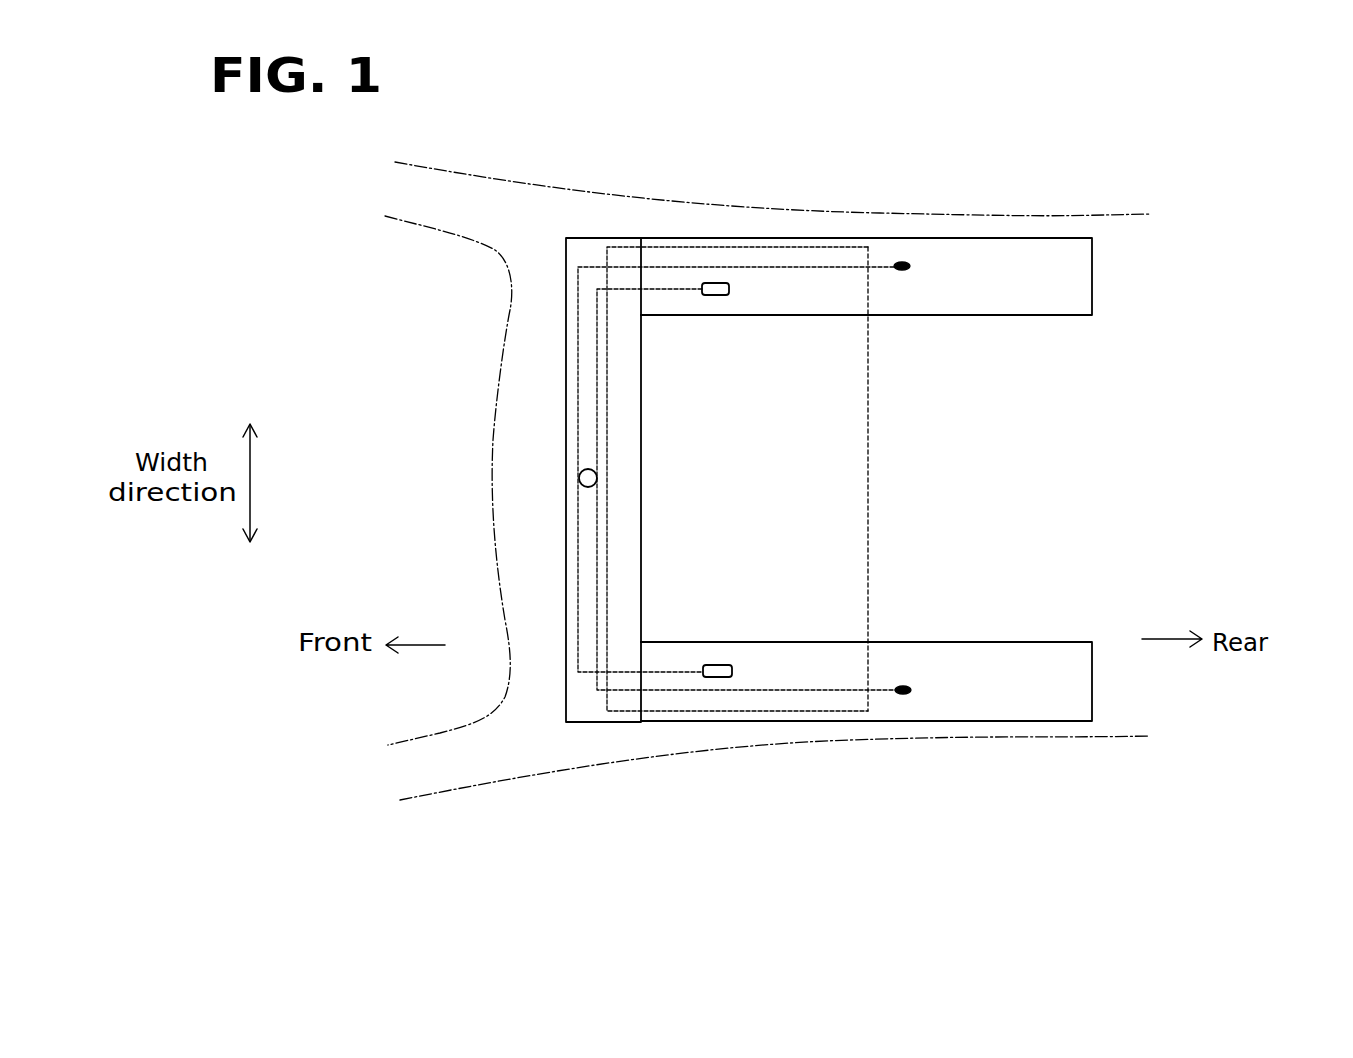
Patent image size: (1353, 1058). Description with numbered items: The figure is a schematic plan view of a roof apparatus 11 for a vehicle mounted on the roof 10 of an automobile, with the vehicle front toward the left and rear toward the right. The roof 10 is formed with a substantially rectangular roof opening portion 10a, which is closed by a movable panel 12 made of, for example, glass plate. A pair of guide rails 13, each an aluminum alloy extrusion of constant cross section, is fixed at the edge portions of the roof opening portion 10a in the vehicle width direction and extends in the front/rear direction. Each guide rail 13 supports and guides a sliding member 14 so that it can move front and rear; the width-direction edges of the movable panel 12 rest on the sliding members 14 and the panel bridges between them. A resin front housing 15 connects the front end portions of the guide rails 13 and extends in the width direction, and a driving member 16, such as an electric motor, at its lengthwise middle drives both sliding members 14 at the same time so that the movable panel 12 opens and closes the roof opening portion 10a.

The roof 10 is at (862, 740).
The roof opening portion 10a is at (795, 503).
The roof apparatus 11 is at (1000, 203).
The movable panel 12 is at (870, 477).
The guide rail 13 is at (810, 236).
The sliding member 14 is at (712, 296).
The front housing 15 is at (566, 248).
The driving member 16 is at (583, 471).